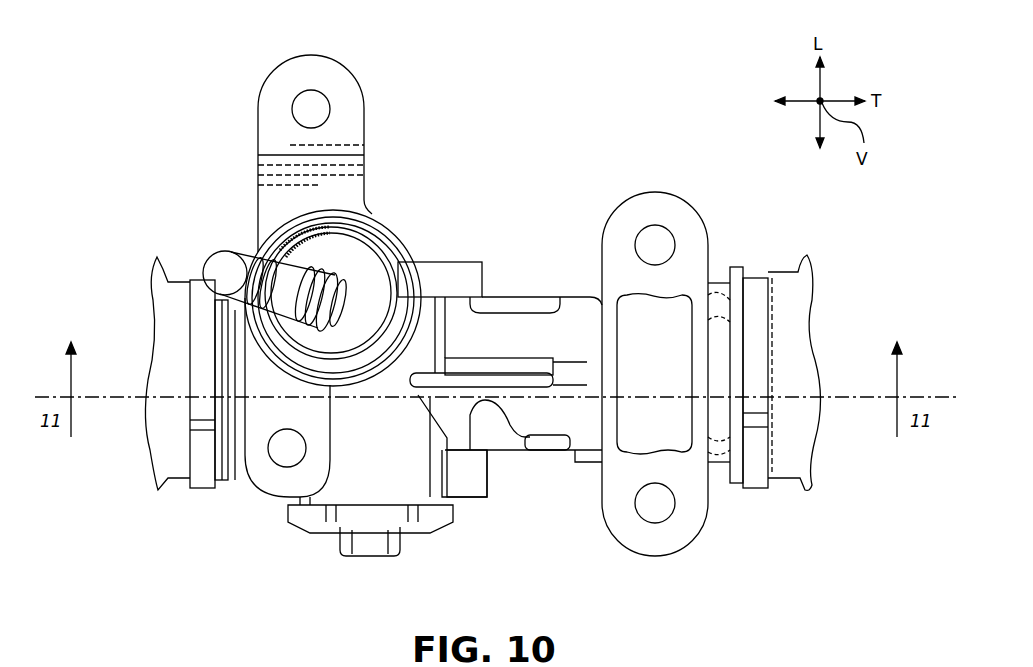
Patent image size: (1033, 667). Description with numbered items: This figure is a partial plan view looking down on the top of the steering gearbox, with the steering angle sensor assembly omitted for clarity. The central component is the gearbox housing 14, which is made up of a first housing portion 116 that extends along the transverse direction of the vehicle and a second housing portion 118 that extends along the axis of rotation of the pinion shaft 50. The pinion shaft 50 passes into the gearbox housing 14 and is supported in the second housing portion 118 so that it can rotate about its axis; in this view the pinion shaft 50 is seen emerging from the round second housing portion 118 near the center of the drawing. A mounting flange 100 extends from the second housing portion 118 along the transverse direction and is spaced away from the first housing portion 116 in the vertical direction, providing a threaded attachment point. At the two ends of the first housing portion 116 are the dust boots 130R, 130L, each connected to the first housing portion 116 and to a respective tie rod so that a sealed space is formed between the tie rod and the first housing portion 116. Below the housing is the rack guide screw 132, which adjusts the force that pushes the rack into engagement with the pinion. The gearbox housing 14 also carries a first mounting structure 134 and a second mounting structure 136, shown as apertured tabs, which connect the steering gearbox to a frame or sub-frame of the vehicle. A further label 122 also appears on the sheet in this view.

The gearbox housing 14 is at (218, 509).
The pinion shaft 50 is at (217, 260).
The mounting flange 100 is at (447, 262).
The first housing portion 116 is at (537, 452).
The second housing portion 118 is at (378, 244).
The housing portion 122 is at (317, 655).
The dust boot 130R is at (152, 297).
The dust boot 130L is at (810, 297).
The rack guide screw 132 is at (365, 557).
The first mounting structure 134 is at (676, 196).
The second mounting structure 136 is at (350, 72).